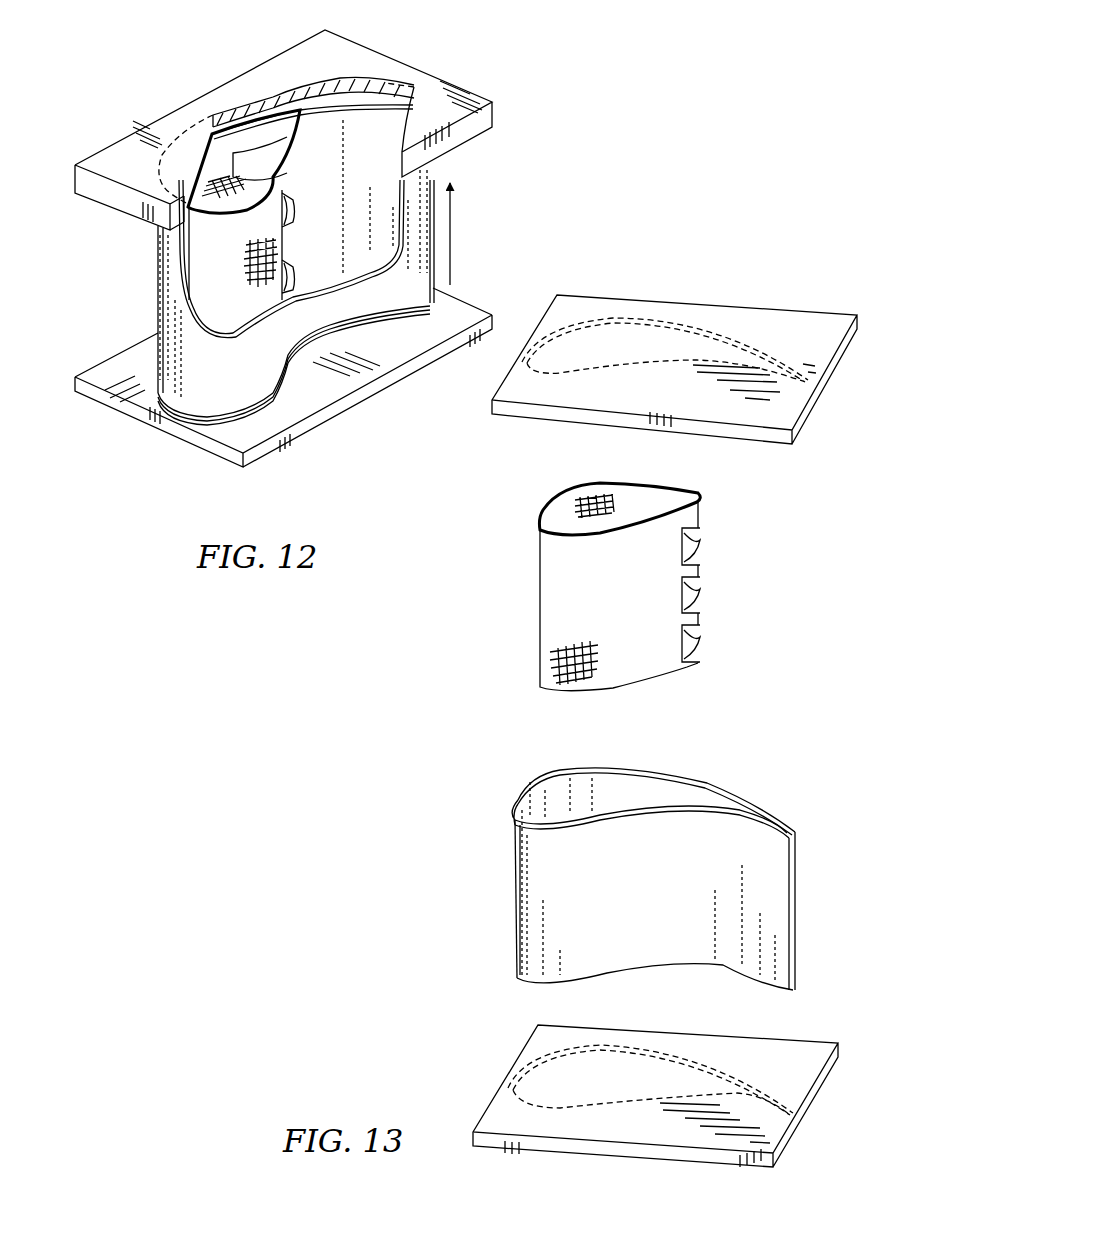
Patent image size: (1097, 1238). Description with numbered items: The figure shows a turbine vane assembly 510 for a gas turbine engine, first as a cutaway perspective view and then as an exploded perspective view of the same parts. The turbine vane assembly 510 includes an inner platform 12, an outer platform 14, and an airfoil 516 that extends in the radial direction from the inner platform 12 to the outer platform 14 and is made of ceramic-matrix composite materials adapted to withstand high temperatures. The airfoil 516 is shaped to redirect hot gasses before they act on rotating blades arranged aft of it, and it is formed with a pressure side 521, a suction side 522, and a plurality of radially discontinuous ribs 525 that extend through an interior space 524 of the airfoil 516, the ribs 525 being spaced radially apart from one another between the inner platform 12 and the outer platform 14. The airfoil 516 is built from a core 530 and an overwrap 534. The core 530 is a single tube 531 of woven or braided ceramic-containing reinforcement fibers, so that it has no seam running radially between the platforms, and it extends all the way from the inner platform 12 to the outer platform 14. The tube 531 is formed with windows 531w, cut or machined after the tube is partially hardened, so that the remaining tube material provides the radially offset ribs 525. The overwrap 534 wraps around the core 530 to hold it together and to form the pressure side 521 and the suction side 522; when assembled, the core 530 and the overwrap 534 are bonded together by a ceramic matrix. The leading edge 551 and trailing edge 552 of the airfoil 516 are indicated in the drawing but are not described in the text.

In FIG. 12, the turbine vane assembly 510 is at (125, 125).
In FIG. 13, the turbine vane assembly 510 is at (622, 258).
In FIG. 12, the inner platform 12 is at (228, 451).
In FIG. 13, the inner platform 12 is at (510, 1118).
In FIG. 12, the outer platform 14 is at (100, 187).
In FIG. 13, the outer platform 14 is at (580, 310).
In FIG. 12, the airfoil 516 is at (137, 292).
In FIG. 13, the airfoil 516 is at (470, 680).
In FIG. 12, the pressure side 521 is at (290, 343).
In FIG. 13, the pressure side 521 is at (688, 958).
In FIG. 12, the suction side 522 is at (190, 281).
In FIG. 13, the suction side 522 is at (697, 772).
In FIG. 13, the interior space 524 is at (650, 800).
In FIG. 12, the ribs 525 is at (298, 137).
In FIG. 13, the ribs 525 is at (707, 512).
In FIG. 12, the core 530 is at (262, 300).
In FIG. 13, the core 530 is at (530, 600).
In FIG. 12, the tube 531 is at (222, 150).
In FIG. 13, the tube 531 is at (602, 478).
In FIG. 13, the windows 531w is at (712, 548).
In FIG. 12, the overwrap 534 is at (197, 382).
In FIG. 13, the overwrap 534 is at (565, 765).
In FIG. 12, the leading edge 551 is at (158, 398).
In FIG. 13, the leading edge 551 is at (513, 910).
In FIG. 12, the trailing edge 552 is at (430, 283).
In FIG. 13, the trailing edge 552 is at (800, 900).